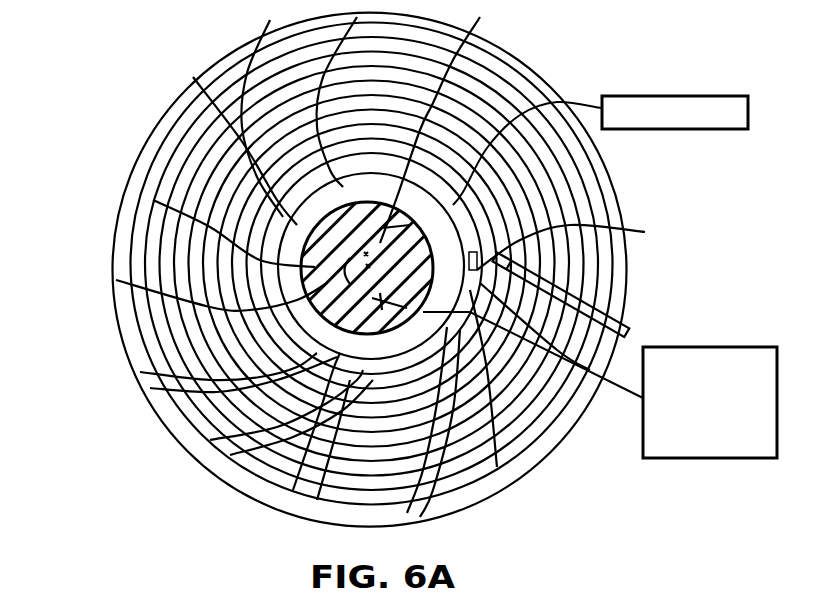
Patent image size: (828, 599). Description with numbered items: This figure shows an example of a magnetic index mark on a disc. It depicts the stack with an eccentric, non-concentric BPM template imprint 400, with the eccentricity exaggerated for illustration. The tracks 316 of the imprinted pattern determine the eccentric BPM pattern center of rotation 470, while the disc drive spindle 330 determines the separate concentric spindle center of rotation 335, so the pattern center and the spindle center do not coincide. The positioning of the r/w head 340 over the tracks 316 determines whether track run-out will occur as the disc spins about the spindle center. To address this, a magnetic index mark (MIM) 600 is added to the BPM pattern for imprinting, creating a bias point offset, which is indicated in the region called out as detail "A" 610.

The stack with eccentric BPM template imprint 400 is at (128, 168).
The tracks 316 is at (193, 77).
The disc drive spindle 330 is at (153, 200).
The concentric spindle center of rotation 335 is at (130, 279).
The r/w head 340 is at (578, 247).
The eccentric BPM pattern center of rotation 470 is at (460, 223).
The detail "A" 610 is at (604, 96).
The magnetic index mark (MIM) 600 is at (658, 445).